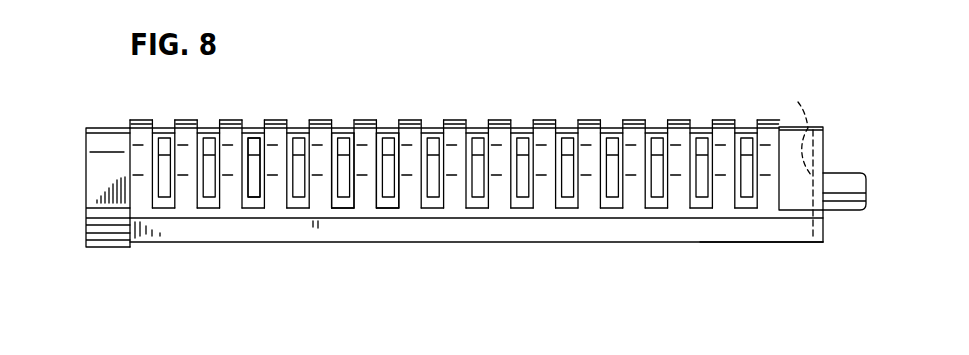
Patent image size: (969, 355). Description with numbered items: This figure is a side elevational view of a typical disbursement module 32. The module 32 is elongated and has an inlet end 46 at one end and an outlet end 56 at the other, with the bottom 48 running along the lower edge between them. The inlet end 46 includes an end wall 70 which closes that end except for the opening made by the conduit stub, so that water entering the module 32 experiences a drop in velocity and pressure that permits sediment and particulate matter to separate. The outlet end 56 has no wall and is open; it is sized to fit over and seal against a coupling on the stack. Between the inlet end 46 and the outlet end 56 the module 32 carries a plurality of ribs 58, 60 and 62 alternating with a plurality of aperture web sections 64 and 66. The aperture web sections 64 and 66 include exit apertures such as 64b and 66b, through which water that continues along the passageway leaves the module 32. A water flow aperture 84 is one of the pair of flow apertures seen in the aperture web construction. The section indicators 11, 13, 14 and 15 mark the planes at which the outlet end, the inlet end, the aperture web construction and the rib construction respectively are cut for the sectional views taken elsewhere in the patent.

The section line 11- 11 is at (110, 268).
The section line 13- 13 is at (837, 265).
The section line 14- 14 is at (412, 320).
The section line 15- 15 is at (475, 300).
The disbursement module 32 is at (671, 244).
The inlet end 46 is at (826, 167).
The bottom 48 is at (758, 244).
The outlet end 56 is at (68, 175).
The rib 58 is at (322, 120).
The rib 60 is at (412, 120).
The rib 62 is at (540, 120).
The aperture web section 64 is at (342, 210).
The exit aperture 64b is at (258, 177).
The aperture web section 66 is at (382, 209).
The exit aperture 66b is at (480, 177).
The end wall 70 is at (798, 159).
The water flow aperture 84 is at (208, 163).